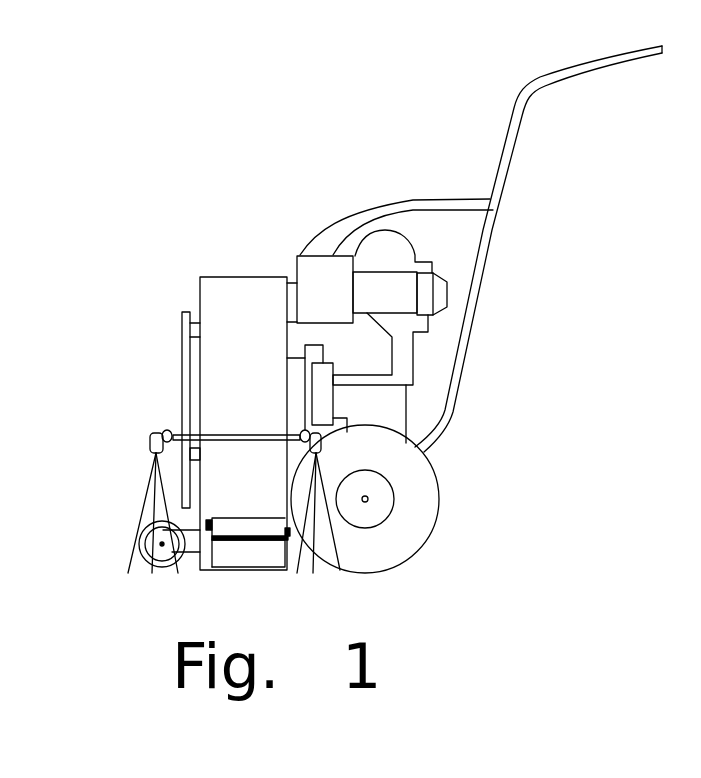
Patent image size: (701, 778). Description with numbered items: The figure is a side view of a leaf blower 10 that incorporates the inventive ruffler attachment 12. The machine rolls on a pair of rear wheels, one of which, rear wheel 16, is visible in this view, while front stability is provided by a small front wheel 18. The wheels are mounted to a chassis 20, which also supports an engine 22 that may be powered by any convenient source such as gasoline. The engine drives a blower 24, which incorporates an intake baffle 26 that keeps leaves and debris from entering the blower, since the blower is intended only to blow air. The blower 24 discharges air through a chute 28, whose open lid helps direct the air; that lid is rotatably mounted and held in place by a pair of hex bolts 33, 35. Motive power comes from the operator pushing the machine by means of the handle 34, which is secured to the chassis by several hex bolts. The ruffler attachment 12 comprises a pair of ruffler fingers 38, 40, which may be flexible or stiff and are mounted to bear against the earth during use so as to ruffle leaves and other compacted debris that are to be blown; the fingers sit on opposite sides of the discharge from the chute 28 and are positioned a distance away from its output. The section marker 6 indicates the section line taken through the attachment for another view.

The leaf blower 10 is at (508, 268).
The ruffler attachment 12 is at (242, 425).
The rear wheel 16 is at (438, 480).
The front wheel 18 is at (136, 553).
The chassis 20 is at (286, 450).
The engine 22 is at (403, 224).
The blower 24 is at (243, 276).
The intake baffle 26 is at (182, 349).
The chute 28 is at (287, 556).
The hex bolt 33 is at (213, 524).
The handle 34 is at (568, 78).
The hex bolt 35 is at (285, 530).
The ruffler finger 38 is at (152, 507).
The ruffler finger 40 is at (320, 483).
The section line 6- 6 is at (188, 412).